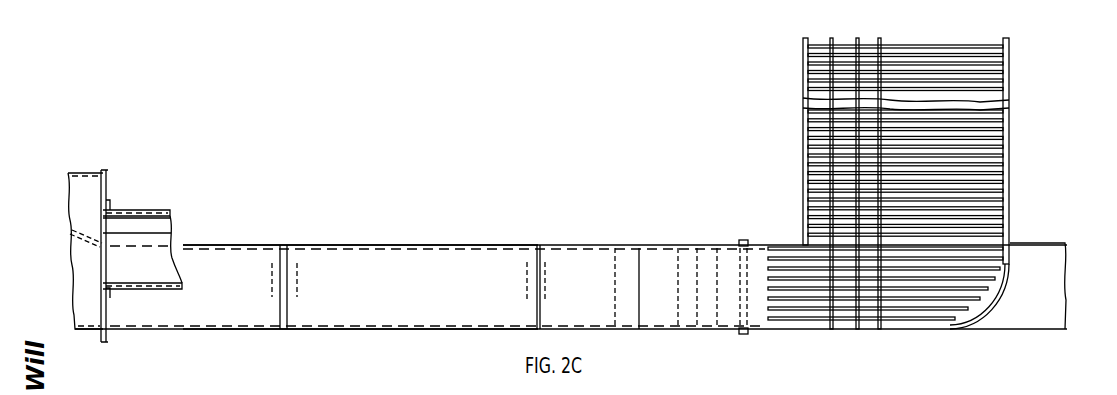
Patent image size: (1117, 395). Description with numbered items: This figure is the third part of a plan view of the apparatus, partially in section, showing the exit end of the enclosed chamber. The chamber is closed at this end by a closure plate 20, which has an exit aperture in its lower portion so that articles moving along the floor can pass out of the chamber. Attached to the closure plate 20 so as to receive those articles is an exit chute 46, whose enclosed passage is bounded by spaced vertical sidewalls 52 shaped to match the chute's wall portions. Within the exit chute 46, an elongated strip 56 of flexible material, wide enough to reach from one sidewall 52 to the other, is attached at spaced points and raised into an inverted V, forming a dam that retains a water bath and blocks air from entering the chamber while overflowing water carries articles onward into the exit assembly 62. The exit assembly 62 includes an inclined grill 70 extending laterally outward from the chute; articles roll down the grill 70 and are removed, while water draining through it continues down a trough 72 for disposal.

The closure plate 20 is at (104, 190).
The exit chute 46 is at (336, 243).
The sidewalls 52 is at (400, 229).
The strip of flexible material 56 is at (729, 265).
The exit assembly 62 is at (1012, 165).
The inclined grill 70 is at (946, 172).
The trough 72 is at (1010, 322).